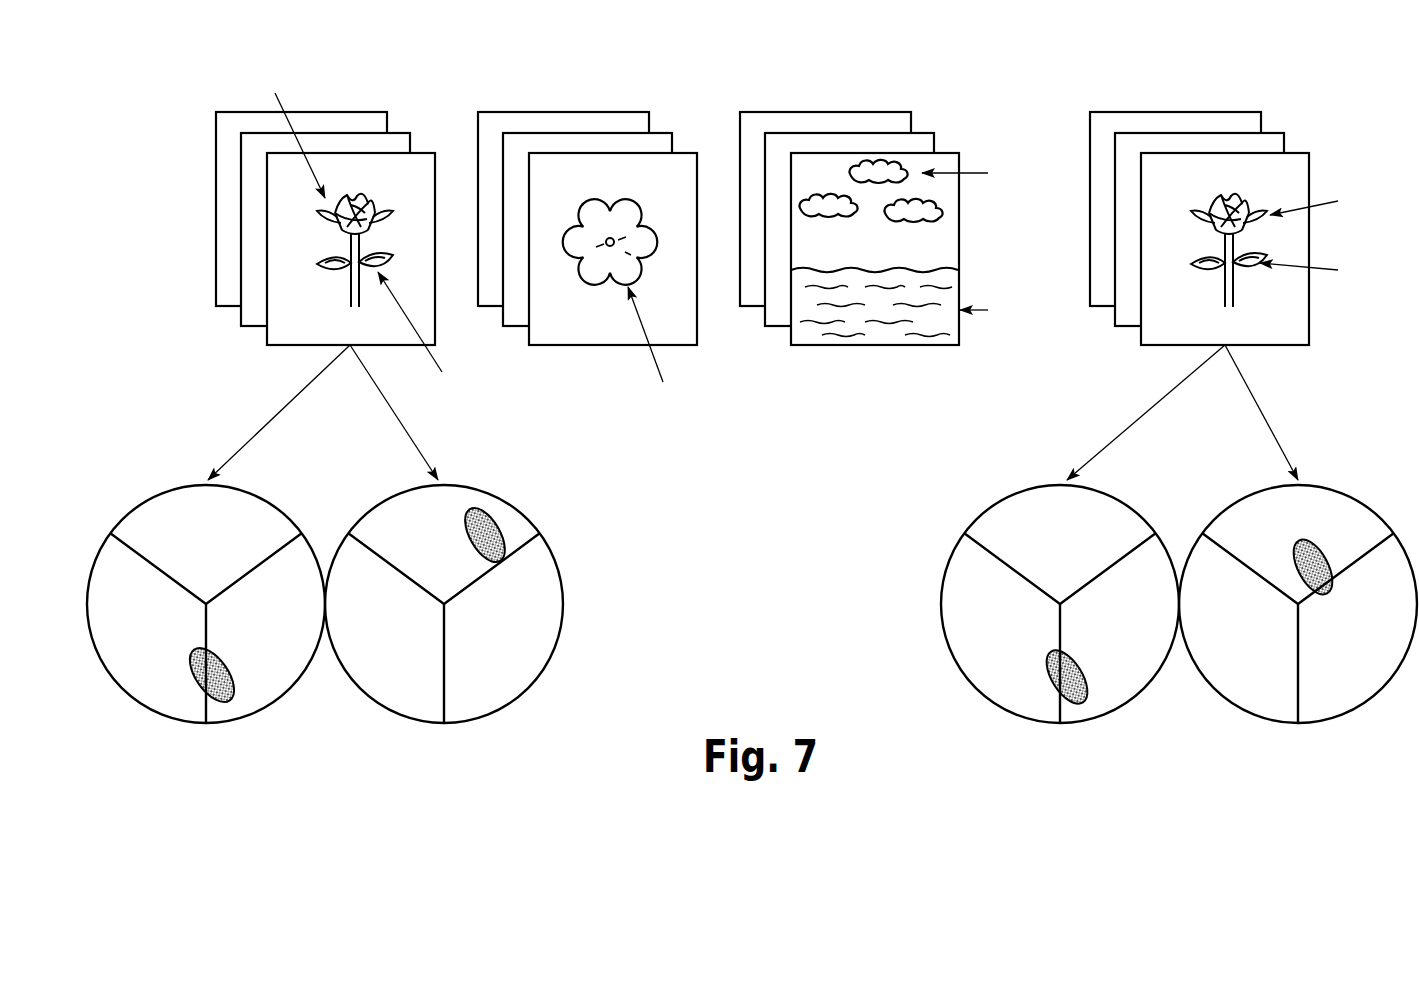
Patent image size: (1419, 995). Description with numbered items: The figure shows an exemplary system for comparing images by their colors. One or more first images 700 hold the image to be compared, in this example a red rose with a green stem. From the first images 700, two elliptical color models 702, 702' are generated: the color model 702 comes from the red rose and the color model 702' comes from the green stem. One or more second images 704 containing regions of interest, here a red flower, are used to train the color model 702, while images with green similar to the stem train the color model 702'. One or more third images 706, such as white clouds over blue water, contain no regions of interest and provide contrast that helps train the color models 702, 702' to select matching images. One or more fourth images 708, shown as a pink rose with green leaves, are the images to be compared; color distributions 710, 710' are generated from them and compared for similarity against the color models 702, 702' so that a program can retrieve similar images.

The first images 700 is at (255, 338).
The elliptical color model 702 is at (445, 600).
The elliptical color model 702' is at (206, 585).
The second images 704 is at (488, 110).
The third images 706 is at (750, 112).
The fourth images 708 is at (1101, 112).
The color distribution 710 is at (1298, 585).
The color distribution 710' is at (1060, 585).